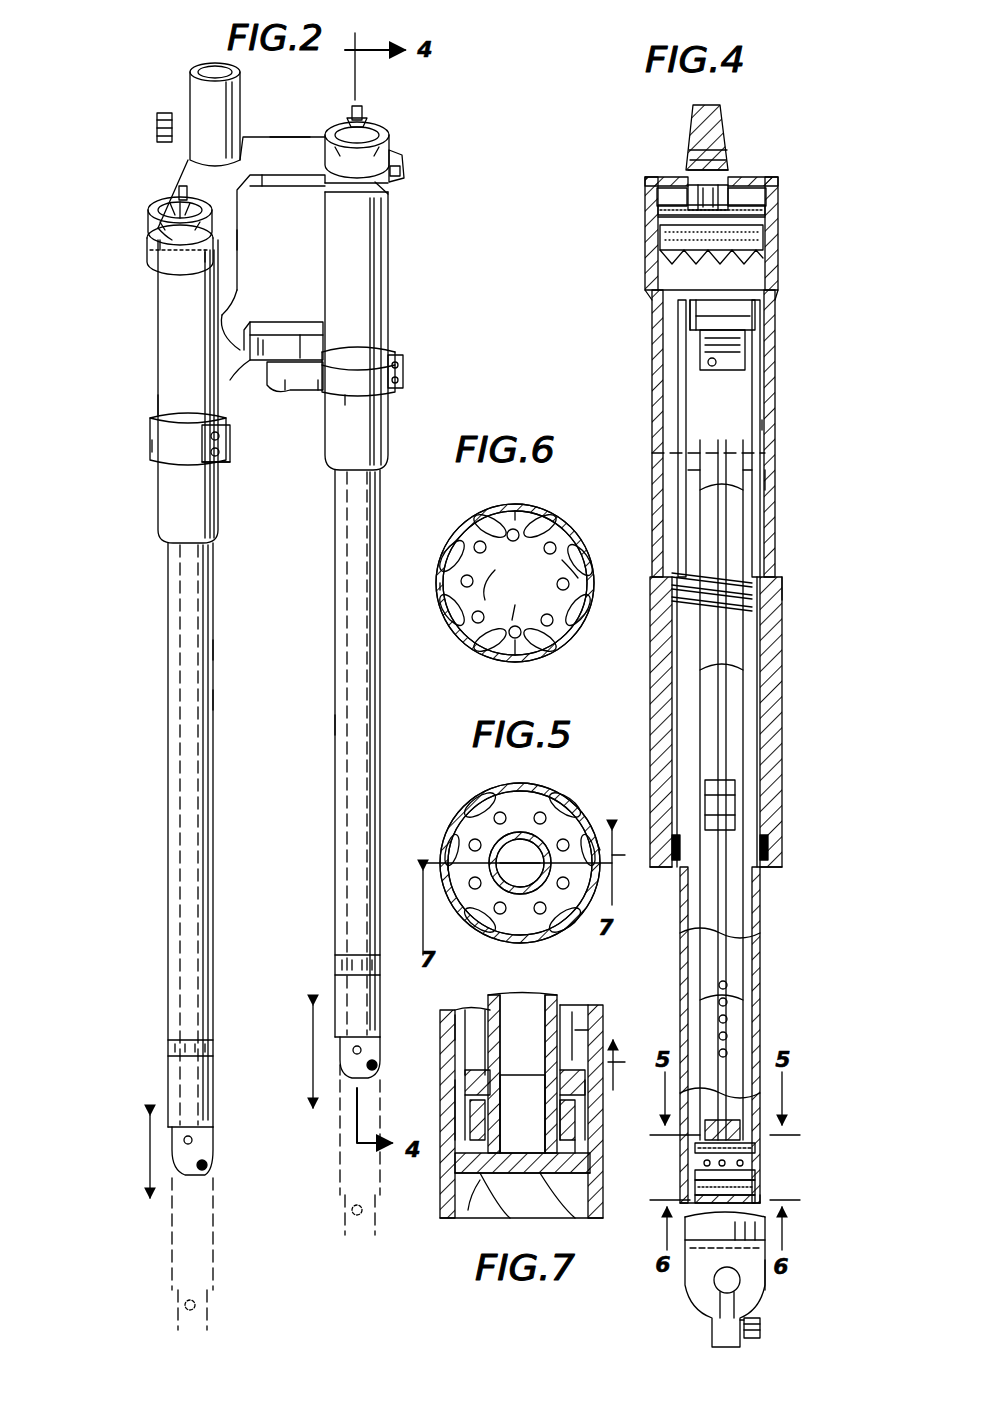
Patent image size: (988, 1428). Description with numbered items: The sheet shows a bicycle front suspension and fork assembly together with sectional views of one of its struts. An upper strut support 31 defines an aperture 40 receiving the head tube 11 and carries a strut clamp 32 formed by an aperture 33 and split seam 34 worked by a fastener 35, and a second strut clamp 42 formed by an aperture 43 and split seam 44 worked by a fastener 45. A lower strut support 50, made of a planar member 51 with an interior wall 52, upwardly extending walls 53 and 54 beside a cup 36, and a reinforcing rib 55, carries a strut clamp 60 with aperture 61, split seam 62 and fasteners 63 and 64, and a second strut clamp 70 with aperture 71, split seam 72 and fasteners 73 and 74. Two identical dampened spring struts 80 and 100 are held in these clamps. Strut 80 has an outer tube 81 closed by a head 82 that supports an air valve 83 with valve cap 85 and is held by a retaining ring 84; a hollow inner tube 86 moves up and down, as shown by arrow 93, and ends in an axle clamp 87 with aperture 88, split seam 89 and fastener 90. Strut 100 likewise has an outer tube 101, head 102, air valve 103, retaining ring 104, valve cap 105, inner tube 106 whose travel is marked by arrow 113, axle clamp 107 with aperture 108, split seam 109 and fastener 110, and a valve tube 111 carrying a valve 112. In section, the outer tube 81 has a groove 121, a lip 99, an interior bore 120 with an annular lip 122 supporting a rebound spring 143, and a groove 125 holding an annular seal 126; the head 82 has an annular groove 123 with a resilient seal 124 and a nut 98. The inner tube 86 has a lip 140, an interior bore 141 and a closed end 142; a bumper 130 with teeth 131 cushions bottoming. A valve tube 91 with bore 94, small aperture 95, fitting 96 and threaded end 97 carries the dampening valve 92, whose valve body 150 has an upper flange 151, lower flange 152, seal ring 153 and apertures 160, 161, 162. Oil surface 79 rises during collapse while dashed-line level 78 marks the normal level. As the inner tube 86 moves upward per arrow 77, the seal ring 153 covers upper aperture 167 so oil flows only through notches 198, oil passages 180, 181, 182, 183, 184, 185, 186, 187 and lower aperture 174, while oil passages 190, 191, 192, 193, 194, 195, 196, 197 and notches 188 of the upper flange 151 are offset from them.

In FIG. 2, the head tube 11 is at (232, 95).
In FIG. 2, the upper strut support 31 is at (290, 130).
In FIG. 2, the strut clamp 32 is at (402, 160).
In FIG. 2, the aperture 33 is at (400, 170).
In FIG. 2, the split seam 34 is at (358, 183).
In FIG. 2, the fastener 35 is at (388, 190).
In FIG. 2, the cup 36 is at (200, 348).
In FIG. 2, the aperture 40 is at (220, 172).
In FIG. 2, the second strut clamp 42 is at (147, 258).
In FIG. 2, the aperture 43 is at (160, 252).
In FIG. 2, the split seam 44 is at (238, 232).
In FIG. 2, the fastener 45 is at (210, 258).
In FIG. 2, the lower strut support 50 is at (335, 342).
In FIG. 2, the planar member 51 is at (300, 335).
In FIG. 2, the interior wall 52 is at (285, 390).
In FIG. 2, the upwardly extending wall 53 is at (268, 322).
In FIG. 2, the upwardly extending wall 54 is at (158, 408).
In FIG. 2, the reinforcing rib 55 is at (362, 343).
In FIG. 2, the strut clamp 60 is at (400, 357).
In FIG. 2, the aperture 61 is at (320, 392).
In FIG. 2, the split seam 62 is at (355, 402).
In FIG. 2, the fastener 63 is at (403, 375).
In FIG. 2, the fastener 64 is at (403, 393).
In FIG. 2, the second strut clamp 70 is at (148, 455).
In FIG. 2, the aperture 71 is at (152, 422).
In FIG. 2, the split seam 72 is at (230, 437).
In FIG. 2, the fastener 73 is at (230, 453).
In FIG. 2, the fastener 74 is at (230, 463).
In FIG. 4, the arrow 77 is at (776, 962).
In FIG. 7, the arrow 77 is at (625, 1062).
In FIG. 4, the dashed-line level 78 is at (650, 453).
In FIG. 4, the oil surface 79 is at (690, 302).
In FIG. 2, the dampened spring strut 80 is at (330, 577).
In FIG. 4, the dampened spring strut 80 is at (782, 480).
In FIG. 6, the dampened spring strut 80 is at (536, 508).
In FIG. 5, the dampened spring strut 80 is at (600, 818).
In FIG. 2, the outer tube 81 is at (388, 262).
In FIG. 4, the outer tube 81 is at (776, 325).
In FIG. 2, the head 82 is at (378, 140).
In FIG. 4, the head 82 is at (718, 205).
In FIG. 2, the air valve 83 is at (366, 124).
In FIG. 4, the air valve 83 is at (695, 140).
In FIG. 2, the retaining ring 84 is at (325, 152).
In FIG. 4, the retaining ring 84 is at (752, 185).
In FIG. 2, the valve cap 85 is at (360, 112).
In FIG. 4, the valve cap 85 is at (722, 120).
In FIG. 2, the inner tube 86 is at (335, 722).
In FIG. 4, the inner tube 86 is at (758, 392).
In FIG. 6, the inner tube 86 is at (487, 650).
In FIG. 5, the inner tube 86 is at (545, 805).
In FIG. 7, the inner tube 86 is at (603, 1030).
In FIG. 2, the axle clamp 87 is at (338, 1062).
In FIG. 4, the axle clamp 87 is at (768, 1275).
In FIG. 2, the aperture 88 is at (352, 1048).
In FIG. 4, the aperture 88 is at (720, 1278).
In FIG. 2, the split seam 89 is at (356, 1078).
In FIG. 4, the split seam 89 is at (745, 1322).
In FIG. 2, the fastener 90 is at (378, 1066).
In FIG. 4, the fastener 90 is at (760, 1332).
In FIG. 7, the fastener 90 is at (450, 1098).
In FIG. 2, the valve tube 91 is at (347, 790).
In FIG. 4, the valve tube 91 is at (740, 682).
In FIG. 5, the valve tube 91 is at (520, 900).
In FIG. 7, the valve tube 91 is at (550, 1020).
In FIG. 2, the dampening valve 92 is at (330, 962).
In FIG. 4, the dampening valve 92 is at (762, 1200).
In FIG. 6, the dampening valve 92 is at (438, 585).
In FIG. 5, the dampening valve 92 is at (458, 825).
In FIG. 7, the dampening valve 92 is at (468, 1198).
In FIG. 2, the arrow 93 is at (310, 1030).
In FIG. 4, the interior bore 94 is at (722, 800).
In FIG. 5, the interior bore 94 is at (525, 905).
In FIG. 7, the interior bore 94 is at (505, 1085).
In FIG. 4, the small aperture 95 is at (732, 352).
In FIG. 4, the fitting 96 is at (692, 318).
In FIG. 4, the threaded end 97 is at (735, 1135).
In FIG. 7, the threaded end 97 is at (510, 1070).
In FIG. 4, the nut 98 is at (665, 186).
In FIG. 4, the lip 99 is at (660, 218).
In FIG. 2, the dampened spring strut 100 is at (216, 652).
In FIG. 2, the outer tube 101 is at (213, 520).
In FIG. 2, the head 102 is at (148, 213).
In FIG. 2, the air valve 103 is at (170, 205).
In FIG. 2, the retaining ring 104 is at (182, 194).
In FIG. 2, the valve cap 105 is at (157, 128).
In FIG. 2, the inner tube 106 is at (216, 700).
In FIG. 2, the axle clamp 107 is at (168, 1145).
In FIG. 2, the aperture 108 is at (190, 1140).
In FIG. 2, the split seam 109 is at (200, 1165).
In FIG. 2, the fastener 110 is at (205, 1170).
In FIG. 2, the valve tube 111 is at (192, 765).
In FIG. 2, the valve 112 is at (165, 1047).
In FIG. 2, the travel arrow 113 is at (148, 1120).
In FIG. 4, the interior bore 120 is at (765, 425).
In FIG. 4, the groove 121 is at (770, 186).
In FIG. 4, the annular lip 122 is at (772, 620).
In FIG. 4, the annular groove 123 is at (648, 200).
In FIG. 4, the resilient seal 124 is at (768, 210).
In FIG. 4, the groove 125 is at (768, 848).
In FIG. 4, the annular seal 126 is at (766, 868).
In FIG. 4, the bumper 130 is at (768, 238).
In FIG. 4, the teeth 131 is at (768, 258).
In FIG. 4, the lip 140 is at (770, 282).
In FIG. 4, the interior bore 141 is at (744, 490).
In FIG. 6, the interior bore 141 is at (522, 655).
In FIG. 5, the interior bore 141 is at (585, 840).
In FIG. 7, the interior bore 141 is at (580, 1035).
In FIG. 4, the closed end 142 is at (750, 1233).
In FIG. 4, the rebound spring 143 is at (745, 577).
In FIG. 4, the valve body 150 is at (755, 1185).
In FIG. 6, the valve body 150 is at (502, 660).
In FIG. 5, the valve body 150 is at (460, 860).
In FIG. 7, the valve body 150 is at (540, 1215).
In FIG. 4, the upper flange 151 is at (755, 1148).
In FIG. 5, the upper flange 151 is at (490, 810).
In FIG. 7, the upper flange 151 is at (465, 1072).
In FIG. 6, the lower flange 152 is at (583, 616).
In FIG. 7, the lower flange 152 is at (588, 1190).
In FIG. 4, the seal ring 153 is at (758, 1205).
In FIG. 6, the seal ring 153 is at (583, 572).
In FIG. 5, the seal ring 153 is at (480, 905).
In FIG. 7, the seal ring 153 is at (457, 1090).
In FIG. 4, the aperture 160 is at (705, 1163).
In FIG. 4, the aperture 161 is at (700, 1173).
In FIG. 4, the aperture 162 is at (742, 1163).
In FIG. 7, the upper aperture 167 is at (470, 1118).
In FIG. 7, the aperture 174 is at (580, 1122).
In FIG. 5, the oil passage 180 is at (462, 895).
In FIG. 5, the oil passage 181 is at (505, 920).
In FIG. 5, the oil passage 182 is at (560, 905).
In FIG. 5, the oil passage 183 is at (612, 890).
In FIG. 5, the oil passage 184 is at (614, 856).
In FIG. 7, the oil passage 184 is at (590, 1010).
In FIG. 5, the oil passage 185 is at (575, 830).
In FIG. 5, the oil passage 186 is at (478, 825).
In FIG. 5, the oil passage 187 is at (470, 845).
In FIG. 5, the notches 188 is at (520, 795).
In FIG. 7, the notches 188 is at (468, 1030).
In FIG. 6, the oil passage 190 is at (515, 625).
In FIG. 6, the oil passage 191 is at (485, 600).
In FIG. 6, the oil passage 192 is at (555, 602).
In FIG. 6, the oil passage 193 is at (569, 584).
In FIG. 6, the oil passage 194 is at (555, 545).
In FIG. 6, the oil passage 195 is at (512, 528).
In FIG. 6, the oil passage 196 is at (477, 543).
In FIG. 6, the oil passage 197 is at (462, 580).
In FIG. 7, the oil passage 197 is at (472, 1195).
In FIG. 6, the notches 198 is at (470, 630).
In FIG. 7, the notches 198 is at (556, 1175).